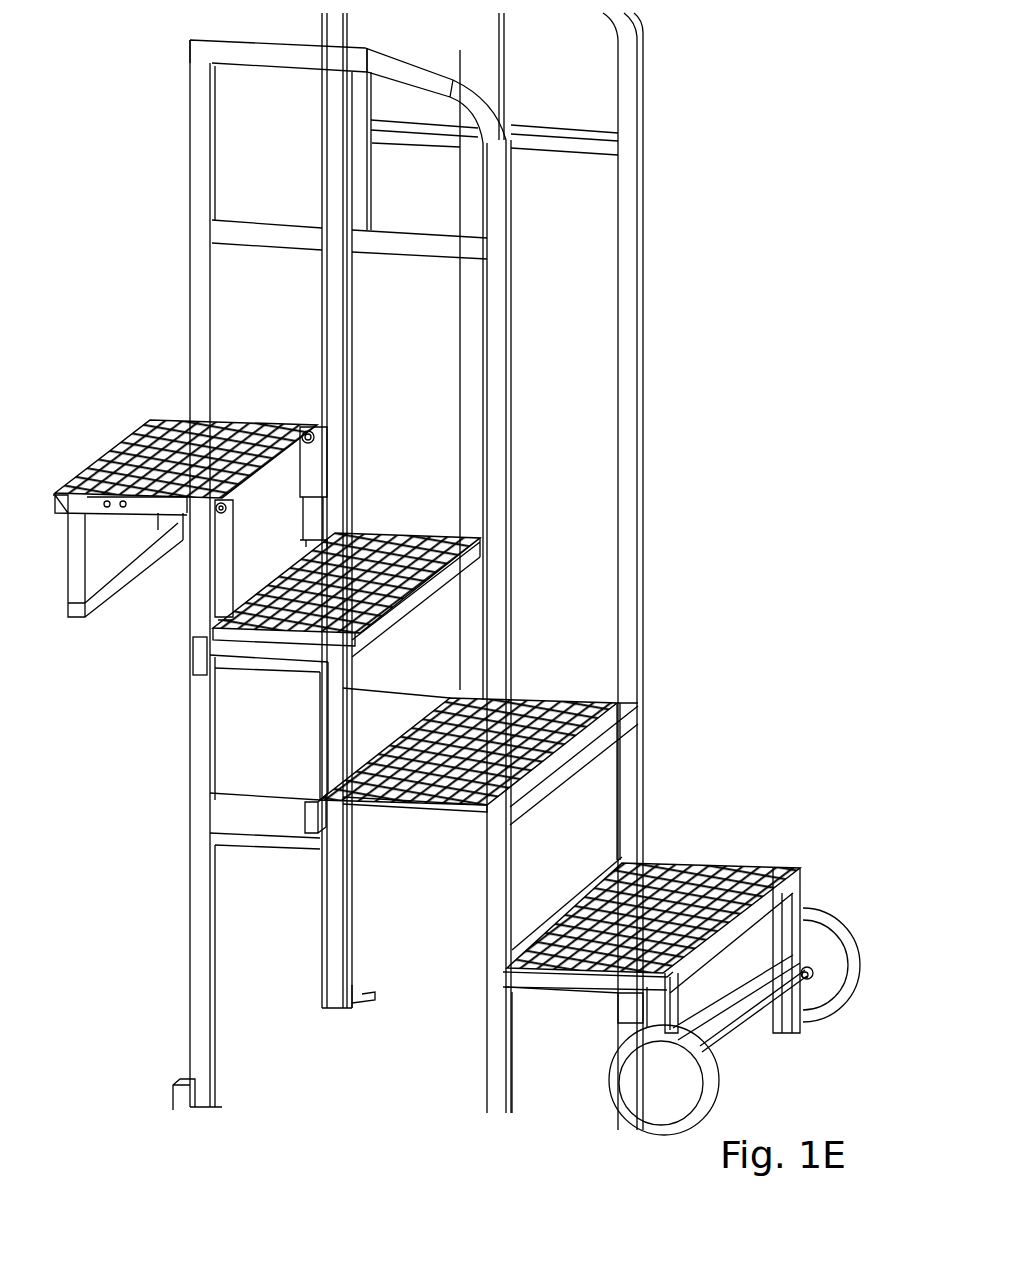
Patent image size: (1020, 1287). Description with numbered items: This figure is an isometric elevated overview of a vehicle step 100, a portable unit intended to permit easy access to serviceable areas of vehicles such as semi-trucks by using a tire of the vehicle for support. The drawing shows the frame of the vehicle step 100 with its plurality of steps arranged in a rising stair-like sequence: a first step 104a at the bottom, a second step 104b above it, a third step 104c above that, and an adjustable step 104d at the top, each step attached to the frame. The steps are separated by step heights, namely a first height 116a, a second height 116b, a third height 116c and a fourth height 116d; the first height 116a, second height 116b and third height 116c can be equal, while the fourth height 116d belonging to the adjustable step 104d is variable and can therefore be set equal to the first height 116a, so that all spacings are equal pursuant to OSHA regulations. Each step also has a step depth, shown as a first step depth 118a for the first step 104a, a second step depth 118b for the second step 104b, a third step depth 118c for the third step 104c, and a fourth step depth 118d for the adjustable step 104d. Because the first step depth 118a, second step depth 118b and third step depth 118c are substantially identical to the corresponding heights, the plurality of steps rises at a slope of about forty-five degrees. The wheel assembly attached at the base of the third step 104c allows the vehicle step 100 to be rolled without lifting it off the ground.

The vehicle step 100 is at (673, 95).
The first step 104a is at (768, 872).
The second step 104b is at (593, 702).
The third step 104c is at (258, 622).
The adjustable step 104d is at (157, 428).
The first height 116a is at (817, 868).
The second height 116b is at (655, 705).
The third height 116c is at (483, 538).
The fourth height 116d is at (330, 430).
The first step depth 118a is at (665, 822).
The second step depth 118b is at (507, 910).
The third step depth 118c is at (212, 707).
The fourth step depth 118d is at (55, 620).